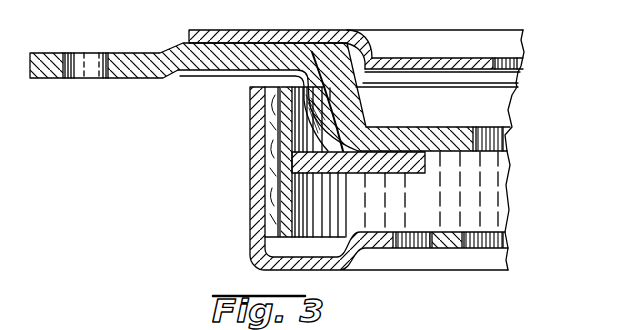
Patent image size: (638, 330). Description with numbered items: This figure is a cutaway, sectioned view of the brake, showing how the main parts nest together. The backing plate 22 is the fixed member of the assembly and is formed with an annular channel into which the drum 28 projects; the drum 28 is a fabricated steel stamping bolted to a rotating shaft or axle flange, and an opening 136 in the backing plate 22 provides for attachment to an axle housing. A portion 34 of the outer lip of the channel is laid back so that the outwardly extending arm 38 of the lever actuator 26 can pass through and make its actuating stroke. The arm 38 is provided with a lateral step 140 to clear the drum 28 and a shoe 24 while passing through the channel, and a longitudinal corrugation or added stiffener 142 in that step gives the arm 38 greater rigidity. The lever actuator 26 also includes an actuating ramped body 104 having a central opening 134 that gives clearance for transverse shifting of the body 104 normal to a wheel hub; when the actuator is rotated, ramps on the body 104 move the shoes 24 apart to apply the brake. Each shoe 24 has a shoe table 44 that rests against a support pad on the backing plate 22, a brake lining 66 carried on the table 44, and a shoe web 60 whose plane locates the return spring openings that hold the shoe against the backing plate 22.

The backing plate 22 is at (459, 57).
The shoes 24 is at (288, 158).
The lever actuator 26 is at (413, 128).
The drum 28 is at (252, 181).
The portion of outer lip 34 is at (255, 30).
The arm 38 is at (124, 72).
The shoe tables 44 is at (288, 224).
The shoe web 60 is at (371, 165).
The brake linings 66 is at (268, 212).
The actuating ramped body 104 is at (458, 128).
The central opening 134 is at (488, 128).
The opening 136 is at (500, 57).
The lateral step 140 is at (358, 83).
The longitudinal corrugation 142 is at (212, 72).